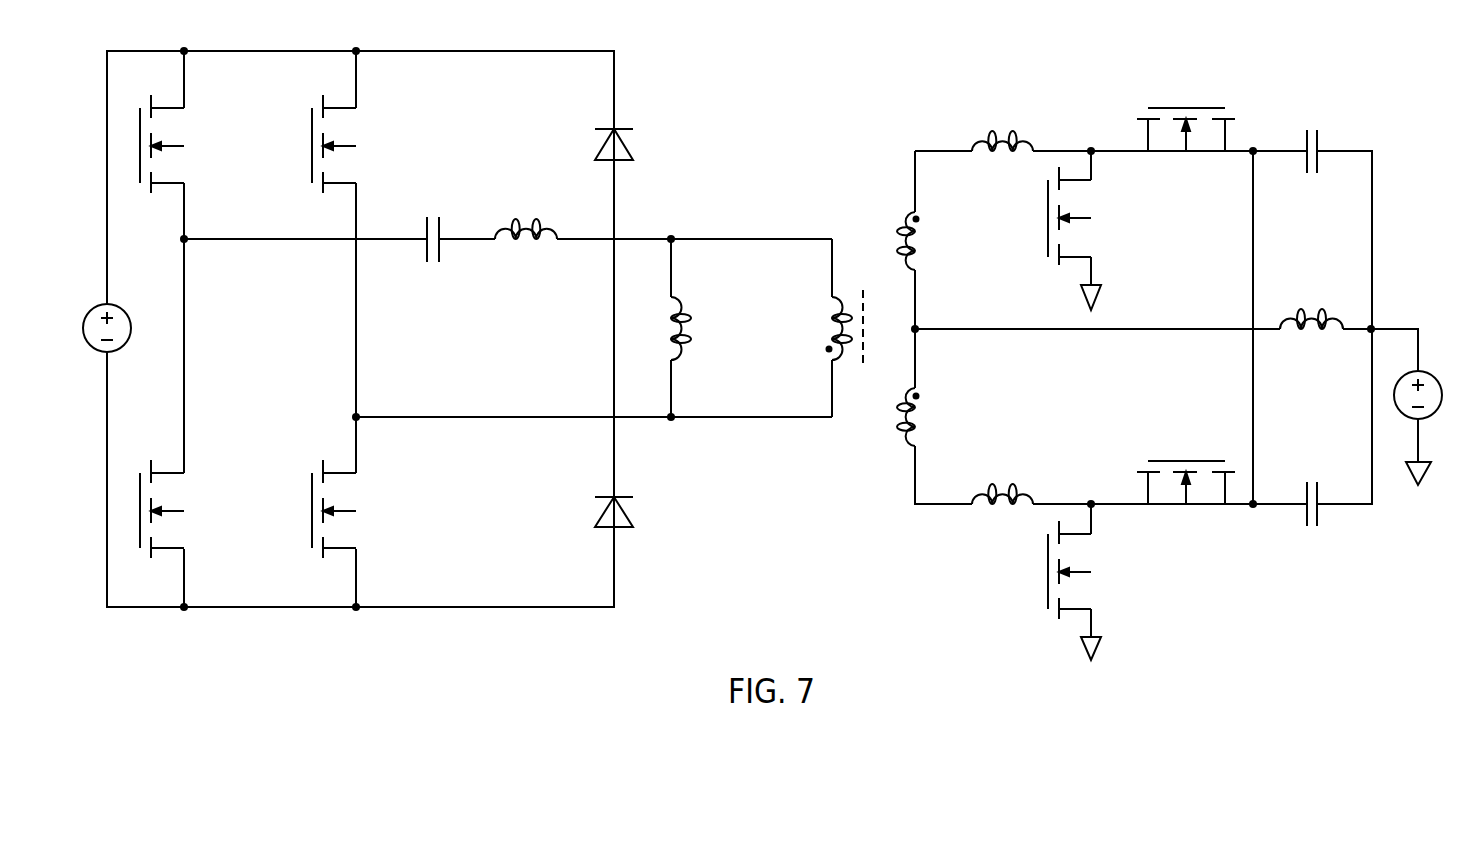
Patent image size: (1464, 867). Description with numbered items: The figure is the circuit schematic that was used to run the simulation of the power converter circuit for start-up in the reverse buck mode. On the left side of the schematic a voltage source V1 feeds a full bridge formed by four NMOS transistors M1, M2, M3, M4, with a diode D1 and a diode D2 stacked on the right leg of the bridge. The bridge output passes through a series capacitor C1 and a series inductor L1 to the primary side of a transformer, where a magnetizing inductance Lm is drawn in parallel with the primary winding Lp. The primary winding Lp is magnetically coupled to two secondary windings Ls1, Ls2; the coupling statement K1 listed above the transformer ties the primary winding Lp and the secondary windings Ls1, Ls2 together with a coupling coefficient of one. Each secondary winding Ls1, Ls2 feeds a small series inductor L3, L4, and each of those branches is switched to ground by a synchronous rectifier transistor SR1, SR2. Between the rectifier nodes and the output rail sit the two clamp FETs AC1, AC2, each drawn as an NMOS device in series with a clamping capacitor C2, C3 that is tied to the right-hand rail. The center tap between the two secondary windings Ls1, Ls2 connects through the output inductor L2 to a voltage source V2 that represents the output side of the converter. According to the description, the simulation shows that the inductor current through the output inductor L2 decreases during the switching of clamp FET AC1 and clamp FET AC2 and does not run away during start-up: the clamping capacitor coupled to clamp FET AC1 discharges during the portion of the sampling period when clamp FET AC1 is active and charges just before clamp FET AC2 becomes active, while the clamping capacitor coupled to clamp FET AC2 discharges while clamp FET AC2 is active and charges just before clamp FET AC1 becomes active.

The NMOS transistor M1 is at (197, 144).
The NMOS transistor M2 is at (197, 509).
The NMOS transistor M3 is at (369, 144).
The NMOS transistor M4 is at (369, 509).
The input voltage source V1 is at (112, 329).
The diode D1 is at (621, 146).
The diode D2 is at (621, 515).
The resonant capacitor C1 (3.9 uF) C1 is at (432, 238).
The resonant inductor L1 (10 uH) L1 is at (526, 229).
The magnetizing inductance Lm (2 mH) Lm is at (700, 328).
The transformer primary winding Lp (20000 uH) Lp is at (805, 327).
The transformer secondary winding Ls1 (50 uH) Ls1 is at (882, 237).
The transformer secondary winding Ls2 (50 uH) Ls2 is at (882, 419).
The coupling coefficient statement K1 Lp Ls1 Ls2 1 K1 is at (888, 101).
The inductor L3 (50 nH) L3 is at (1002, 141).
The inductor L4 (50 nH) L4 is at (1002, 494).
The synchronous rectifier NMOS transistor SR1 is at (1132, 590).
The synchronous rectifier NMOS transistor SR2 is at (1132, 238).
The clamp FET AC1 is at (1186, 146).
The clamp FET AC2 is at (1186, 499).
The output capacitor C2 is at (1312, 154).
The output capacitor C3 is at (1312, 506).
The inductor L2 is at (1311, 321).
The output voltage source V2 is at (1423, 410).